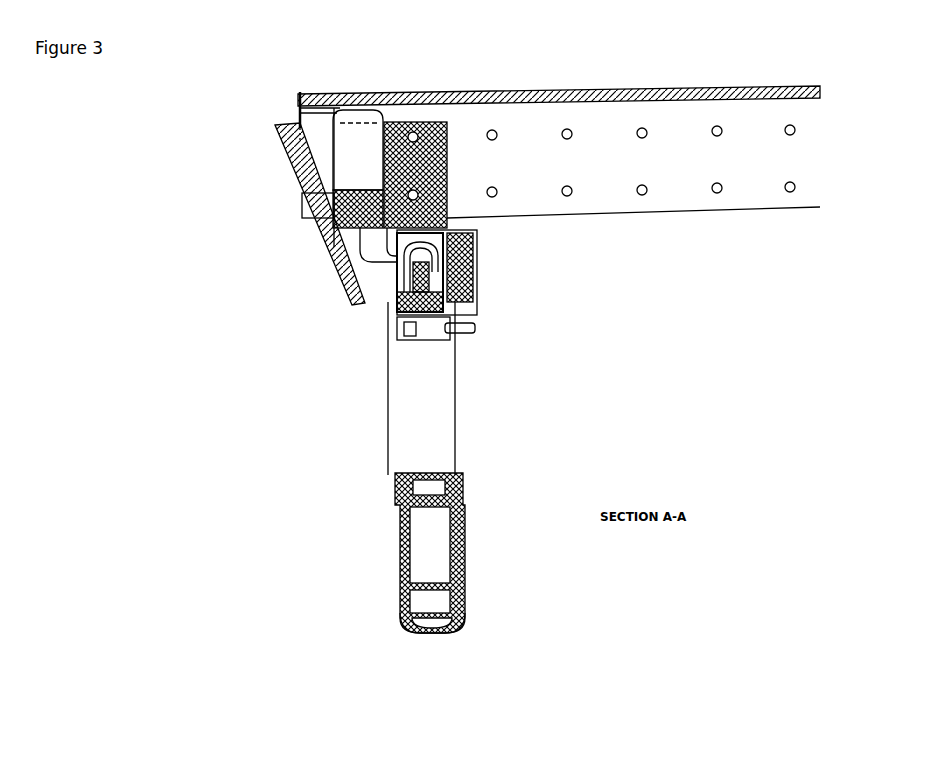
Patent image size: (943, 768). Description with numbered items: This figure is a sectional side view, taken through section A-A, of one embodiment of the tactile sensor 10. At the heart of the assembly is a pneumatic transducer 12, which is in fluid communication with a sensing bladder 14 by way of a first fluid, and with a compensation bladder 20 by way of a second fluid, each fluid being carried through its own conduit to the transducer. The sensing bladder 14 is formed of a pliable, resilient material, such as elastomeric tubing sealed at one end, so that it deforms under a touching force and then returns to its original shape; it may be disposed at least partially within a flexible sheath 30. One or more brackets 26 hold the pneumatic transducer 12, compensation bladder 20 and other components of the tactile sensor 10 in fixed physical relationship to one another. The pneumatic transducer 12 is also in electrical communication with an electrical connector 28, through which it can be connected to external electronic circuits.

The tactile sensor 10 is at (481, 70).
The pneumatic transducer 12 is at (390, 305).
The sensing bladder 14 is at (413, 630).
The compensation bladder 20 is at (352, 125).
The bracket 26 is at (327, 235).
The electrical connector 28 is at (475, 330).
The flexible sheath 30 is at (457, 508).